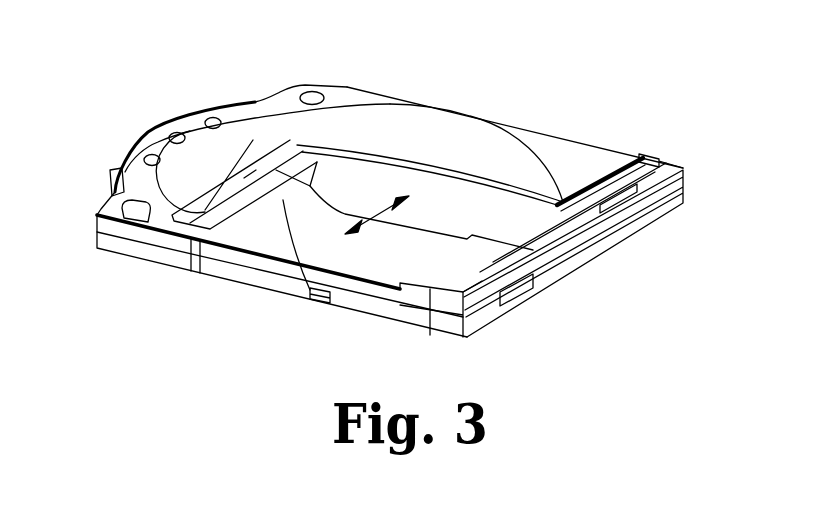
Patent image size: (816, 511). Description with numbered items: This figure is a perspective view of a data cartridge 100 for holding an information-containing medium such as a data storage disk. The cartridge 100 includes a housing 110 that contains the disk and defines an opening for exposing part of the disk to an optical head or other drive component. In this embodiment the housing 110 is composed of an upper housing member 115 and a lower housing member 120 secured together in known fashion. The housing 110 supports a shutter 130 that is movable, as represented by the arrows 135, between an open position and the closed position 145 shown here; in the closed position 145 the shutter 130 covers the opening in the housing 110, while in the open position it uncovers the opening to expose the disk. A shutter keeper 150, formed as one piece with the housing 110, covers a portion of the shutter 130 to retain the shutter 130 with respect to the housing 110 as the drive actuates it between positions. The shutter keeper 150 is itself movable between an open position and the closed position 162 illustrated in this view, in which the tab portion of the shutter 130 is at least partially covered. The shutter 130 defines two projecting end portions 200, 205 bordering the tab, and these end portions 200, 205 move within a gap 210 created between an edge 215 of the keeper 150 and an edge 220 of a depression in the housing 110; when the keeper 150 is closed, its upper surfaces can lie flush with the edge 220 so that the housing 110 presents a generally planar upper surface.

The cartridge 100 is at (175, 68).
The housing 110 is at (320, 86).
The upper housing member 115 is at (95, 220).
The lower housing member 120 is at (118, 244).
The shutter 130 is at (600, 210).
The arrows 135 is at (370, 224).
The closed position 145 is at (554, 212).
The shutter keeper 150 is at (148, 145).
The closed position 162 is at (185, 223).
The projecting end portion 200 is at (312, 299).
The projecting end portion 205 is at (410, 107).
The gap 210 is at (247, 207).
The edge of keeper 215 is at (252, 200).
The edge of depression 220 is at (263, 200).